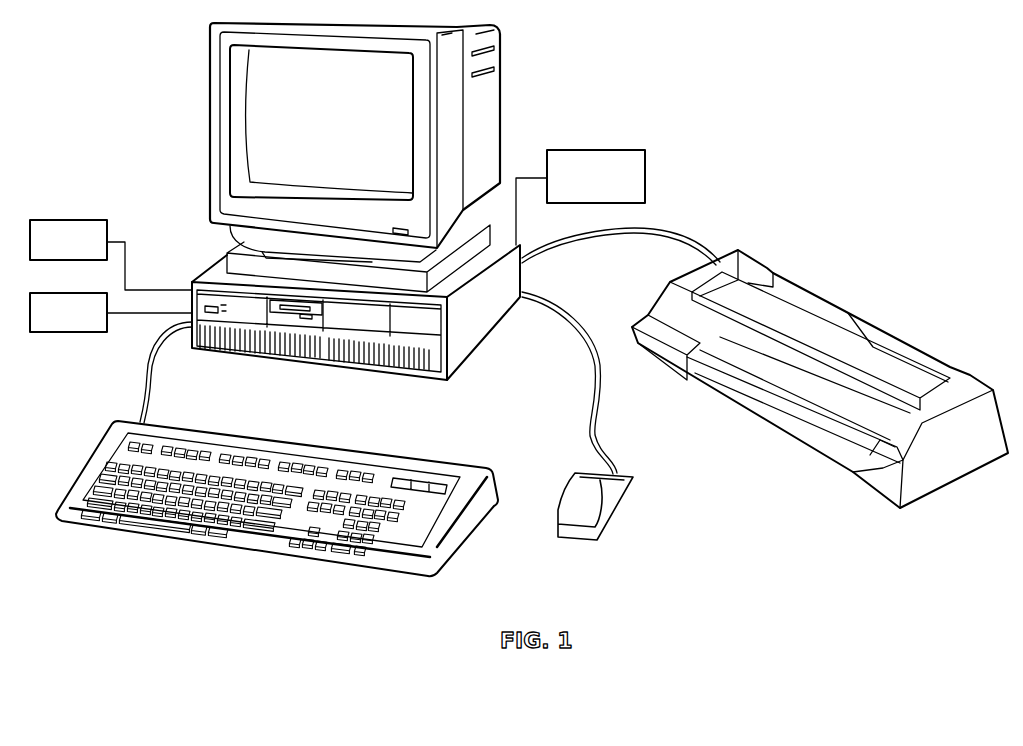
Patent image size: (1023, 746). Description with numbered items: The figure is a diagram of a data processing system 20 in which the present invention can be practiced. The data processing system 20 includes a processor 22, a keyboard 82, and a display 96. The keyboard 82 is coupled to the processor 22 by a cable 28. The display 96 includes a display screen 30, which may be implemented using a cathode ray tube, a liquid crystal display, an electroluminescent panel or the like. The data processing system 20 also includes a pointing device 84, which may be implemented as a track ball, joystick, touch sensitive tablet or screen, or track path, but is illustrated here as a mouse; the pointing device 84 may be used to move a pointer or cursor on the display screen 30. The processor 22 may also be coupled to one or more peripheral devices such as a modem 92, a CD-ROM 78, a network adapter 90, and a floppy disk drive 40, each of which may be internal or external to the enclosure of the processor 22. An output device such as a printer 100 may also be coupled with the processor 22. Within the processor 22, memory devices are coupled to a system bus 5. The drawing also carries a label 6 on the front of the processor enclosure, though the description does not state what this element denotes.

The data processing system 20 is at (683, 104).
The display screen 30 is at (300, 144).
The display 96 is at (203, 120).
The modem 92 is at (72, 220).
The network adapter 90 is at (592, 149).
The printer 100 is at (766, 248).
The CD-ROM 78 is at (77, 334).
The cable 28 is at (148, 372).
The floppy disk drive 40 is at (296, 338).
The ventilation grille 6 is at (383, 345).
The system bus 5 is at (393, 337).
The processor 22 is at (455, 403).
The pointing device 84 is at (630, 497).
The keyboard 82 is at (232, 556).